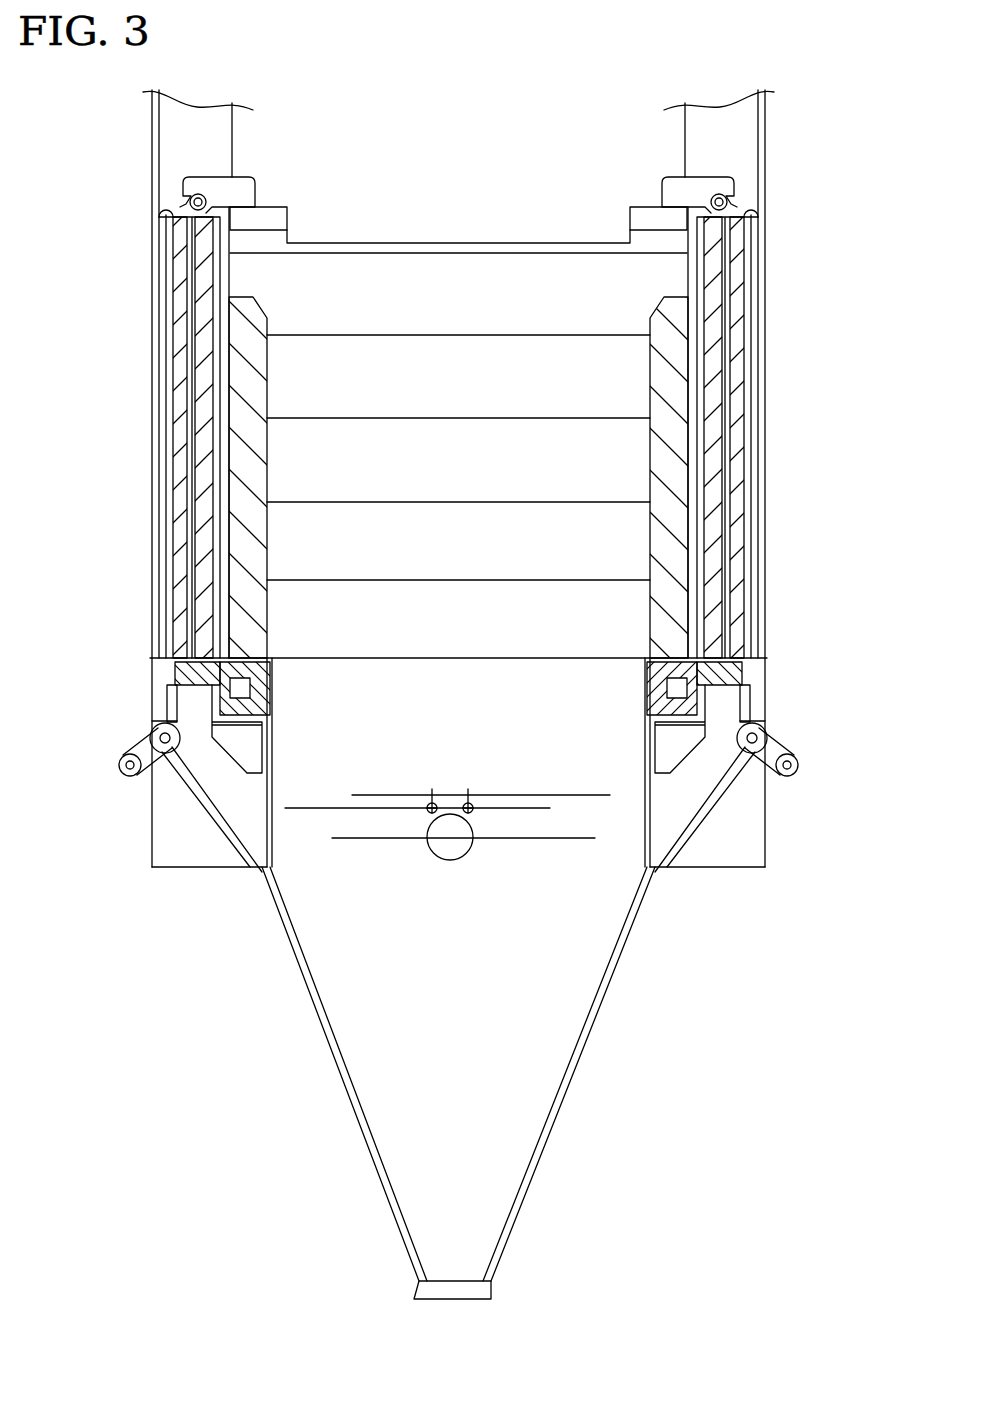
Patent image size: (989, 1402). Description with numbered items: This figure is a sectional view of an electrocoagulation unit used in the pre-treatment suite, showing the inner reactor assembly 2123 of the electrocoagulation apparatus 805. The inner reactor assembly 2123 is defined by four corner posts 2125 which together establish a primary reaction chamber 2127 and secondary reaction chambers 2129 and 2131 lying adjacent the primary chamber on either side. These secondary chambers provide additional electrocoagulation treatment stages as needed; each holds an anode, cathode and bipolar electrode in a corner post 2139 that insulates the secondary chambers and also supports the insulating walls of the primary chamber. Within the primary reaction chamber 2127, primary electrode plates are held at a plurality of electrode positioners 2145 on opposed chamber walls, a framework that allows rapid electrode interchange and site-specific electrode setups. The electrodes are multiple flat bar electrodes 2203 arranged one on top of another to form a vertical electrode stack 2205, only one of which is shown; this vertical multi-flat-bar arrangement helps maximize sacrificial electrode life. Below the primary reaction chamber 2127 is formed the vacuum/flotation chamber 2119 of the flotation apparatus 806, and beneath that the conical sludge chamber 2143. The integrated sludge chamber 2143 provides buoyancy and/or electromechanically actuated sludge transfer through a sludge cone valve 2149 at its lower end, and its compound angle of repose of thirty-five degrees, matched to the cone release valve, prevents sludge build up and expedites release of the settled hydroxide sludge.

The electrocoagulation apparatus 805 is at (518, 281).
The flotation apparatus 806 is at (336, 119).
The vacuum/flotation chamber 2119 is at (420, 170).
The inner reactor assembly 2123 is at (767, 282).
The corner posts 2125 is at (182, 152).
The primary reaction chamber 2127 is at (458, 497).
The secondary reaction chamber 2129 is at (181, 483).
The secondary reaction chamber 2131 is at (723, 460).
The corner post 2139 is at (156, 204).
The conical sludge chamber 2143 is at (486, 1062).
The electrode positioners 2145 is at (268, 542).
The sludge cone valve 2149 is at (490, 1290).
The flat bar electrodes 2203 is at (518, 460).
The electrode stack 2205 is at (405, 333).